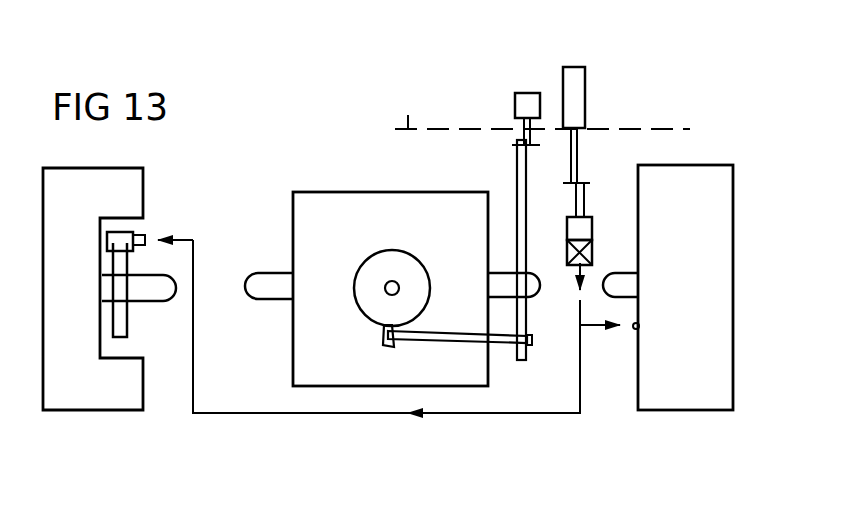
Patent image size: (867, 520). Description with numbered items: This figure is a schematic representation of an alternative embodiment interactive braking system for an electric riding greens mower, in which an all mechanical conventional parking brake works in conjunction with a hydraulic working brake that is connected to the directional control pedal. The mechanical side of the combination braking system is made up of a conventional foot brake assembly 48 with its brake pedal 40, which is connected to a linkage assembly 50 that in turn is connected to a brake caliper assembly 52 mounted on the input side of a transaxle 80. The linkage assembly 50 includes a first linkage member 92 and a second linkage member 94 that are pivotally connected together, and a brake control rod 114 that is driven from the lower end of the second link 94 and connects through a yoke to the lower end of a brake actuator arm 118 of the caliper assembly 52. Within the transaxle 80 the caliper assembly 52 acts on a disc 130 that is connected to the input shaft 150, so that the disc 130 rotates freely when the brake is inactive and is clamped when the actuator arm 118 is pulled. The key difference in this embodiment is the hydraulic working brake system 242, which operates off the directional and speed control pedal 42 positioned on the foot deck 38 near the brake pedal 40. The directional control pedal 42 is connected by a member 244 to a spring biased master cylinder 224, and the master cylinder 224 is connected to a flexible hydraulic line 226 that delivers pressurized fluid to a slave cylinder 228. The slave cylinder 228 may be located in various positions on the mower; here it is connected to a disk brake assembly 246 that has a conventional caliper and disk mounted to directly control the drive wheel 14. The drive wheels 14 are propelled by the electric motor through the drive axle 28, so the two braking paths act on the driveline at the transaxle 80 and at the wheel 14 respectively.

The drive wheel 14 is at (152, 143).
The drive axle 28 is at (152, 290).
The foot deck 38 is at (408, 118).
The brake pedal 40 is at (525, 95).
The directional control pedal 42 is at (582, 78).
The brake pedal assembly 48 is at (490, 102).
The linkage assembly 50 is at (522, 372).
The brake caliper assembly 52 is at (282, 366).
The transaxle 80 is at (322, 215).
The first linkage member 92 is at (516, 178).
The second linkage member 94 is at (525, 328).
The brake control rod 114 is at (460, 342).
The brake actuator arm 118 is at (386, 347).
The disc 130 is at (393, 262).
The input shaft 150 is at (397, 285).
The master cylinder 224 is at (593, 224).
The flexible hydraulic line 226 is at (302, 416).
The slave cylinder 228 is at (158, 241).
The hydraulic working brake system 242 is at (640, 148).
The member 244 is at (608, 194).
The disk brake assembly 246 is at (160, 211).